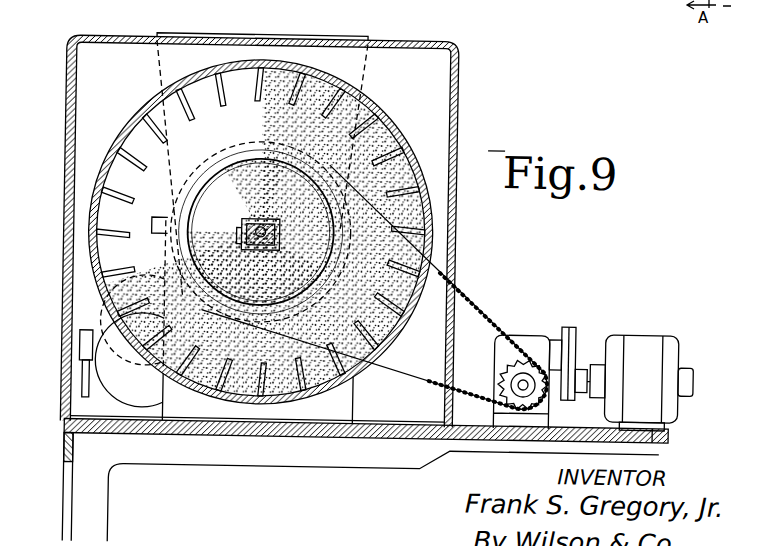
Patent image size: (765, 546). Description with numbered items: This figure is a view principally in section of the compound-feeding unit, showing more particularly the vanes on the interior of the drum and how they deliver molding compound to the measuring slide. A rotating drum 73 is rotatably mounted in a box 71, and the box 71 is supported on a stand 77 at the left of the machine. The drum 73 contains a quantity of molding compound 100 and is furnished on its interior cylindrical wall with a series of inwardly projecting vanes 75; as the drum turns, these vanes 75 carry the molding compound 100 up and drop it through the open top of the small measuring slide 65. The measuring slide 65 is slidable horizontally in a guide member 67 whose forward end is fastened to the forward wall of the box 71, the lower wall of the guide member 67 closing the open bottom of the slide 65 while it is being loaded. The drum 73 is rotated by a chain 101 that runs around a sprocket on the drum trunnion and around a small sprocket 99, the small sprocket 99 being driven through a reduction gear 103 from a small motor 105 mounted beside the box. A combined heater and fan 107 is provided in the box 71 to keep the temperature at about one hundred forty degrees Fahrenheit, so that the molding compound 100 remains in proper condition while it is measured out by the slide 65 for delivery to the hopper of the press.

The measuring slide 65 is at (279, 224).
The guide member 67 is at (258, 254).
The box 71 is at (456, 69).
The rotating drum 73 is at (398, 134).
The vanes 75 is at (250, 80).
The stand 77 is at (105, 490).
The small sprocket 99 is at (520, 365).
The molding compound 100 is at (392, 240).
The chain 101 is at (487, 318).
The reduction gear 103 is at (549, 336).
The small motor 105 is at (637, 342).
The combined heater and fan 107 is at (122, 392).